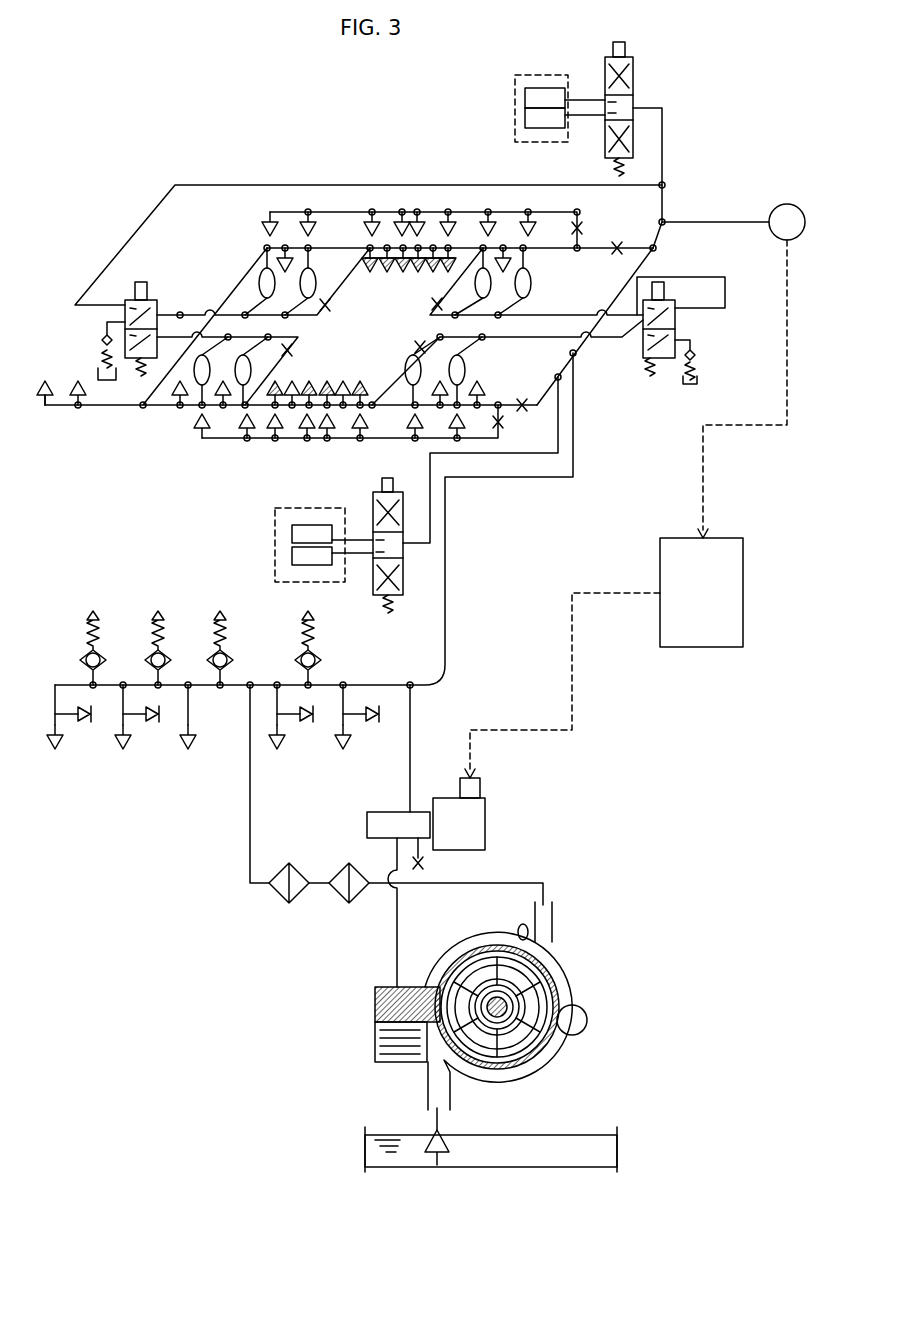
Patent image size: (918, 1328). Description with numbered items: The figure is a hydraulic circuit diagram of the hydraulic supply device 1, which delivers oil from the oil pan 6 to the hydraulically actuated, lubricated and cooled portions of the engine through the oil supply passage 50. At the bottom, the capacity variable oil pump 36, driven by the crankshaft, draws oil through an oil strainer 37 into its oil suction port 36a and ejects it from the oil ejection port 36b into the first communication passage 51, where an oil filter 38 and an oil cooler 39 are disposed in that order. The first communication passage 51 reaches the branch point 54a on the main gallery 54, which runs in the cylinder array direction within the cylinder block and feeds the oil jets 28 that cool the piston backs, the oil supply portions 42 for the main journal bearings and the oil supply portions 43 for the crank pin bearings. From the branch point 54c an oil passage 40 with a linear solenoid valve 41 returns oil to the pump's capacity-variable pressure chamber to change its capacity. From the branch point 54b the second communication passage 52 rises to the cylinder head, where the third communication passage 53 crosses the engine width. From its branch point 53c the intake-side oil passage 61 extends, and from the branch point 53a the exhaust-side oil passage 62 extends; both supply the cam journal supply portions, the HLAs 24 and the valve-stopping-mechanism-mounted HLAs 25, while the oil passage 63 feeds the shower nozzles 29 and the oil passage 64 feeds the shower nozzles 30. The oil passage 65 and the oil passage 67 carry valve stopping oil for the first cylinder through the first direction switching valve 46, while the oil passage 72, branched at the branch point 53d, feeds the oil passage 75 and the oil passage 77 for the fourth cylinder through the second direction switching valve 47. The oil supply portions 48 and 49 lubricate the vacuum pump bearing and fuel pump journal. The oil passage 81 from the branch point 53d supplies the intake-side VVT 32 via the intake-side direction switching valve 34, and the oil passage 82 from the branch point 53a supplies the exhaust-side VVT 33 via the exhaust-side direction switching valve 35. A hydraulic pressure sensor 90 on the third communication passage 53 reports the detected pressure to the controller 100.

The hydraulic supply device 1 is at (701, 58).
The oil pan 6 is at (618, 1152).
The HLA 24 is at (365, 270).
The valve-stopping-mechanism-mounted HLA 25 is at (262, 270).
The oil jet 28 is at (82, 633).
The shower nozzle 29 is at (262, 228).
The shower nozzle 30 is at (198, 428).
The intake-side VVT 32 is at (548, 75).
The exhaust-side VVT 33 is at (314, 508).
The intake-side direction switching valve 34 is at (636, 72).
The exhaust-side direction switching valve 35 is at (403, 592).
The oil pump 36 is at (588, 897).
The oil suction port 36a is at (422, 1088).
The oil ejection port 36b is at (556, 910).
The oil strainer 37 is at (438, 1165).
The oil filter 38 is at (348, 903).
The oil cooler 39 is at (288, 903).
The oil passage 40 is at (410, 765).
The linear solenoid valve 41 is at (485, 822).
The oil supply portion 42 is at (52, 752).
The oil supply portion 43 is at (382, 716).
The first direction switching valve 46 is at (706, 327).
The second direction switching valve 47 is at (80, 325).
The oil supply portion 48 is at (78, 380).
The oil supply portion 49 is at (45, 380).
The oil supply passage 50 is at (157, 806).
The first communication passage 51 is at (250, 810).
The second communication passage 52 is at (446, 518).
The third communication passage 53 is at (578, 356).
The branch point 53a is at (562, 380).
The branch point 53c is at (657, 248).
The branch point 53d is at (665, 187).
The main gallery 54 is at (78, 685).
The branch point 54a is at (250, 685).
The branch point 54b is at (454, 657).
The branch point 54c is at (410, 685).
The oil passage 61 is at (598, 245).
The oil passage 62 is at (157, 410).
The oil passage 63 is at (332, 212).
The oil passage 64 is at (228, 442).
The oil passage 65 is at (537, 313).
The oil passage 67 is at (505, 342).
The oil passage 72 is at (215, 185).
The oil passage 75 is at (200, 320).
The oil passage 77 is at (180, 330).
The oil passage 81 is at (664, 156).
The oil passage 82 is at (430, 483).
The hydraulic pressure sensor 90 is at (795, 205).
The controller 100 is at (716, 538).